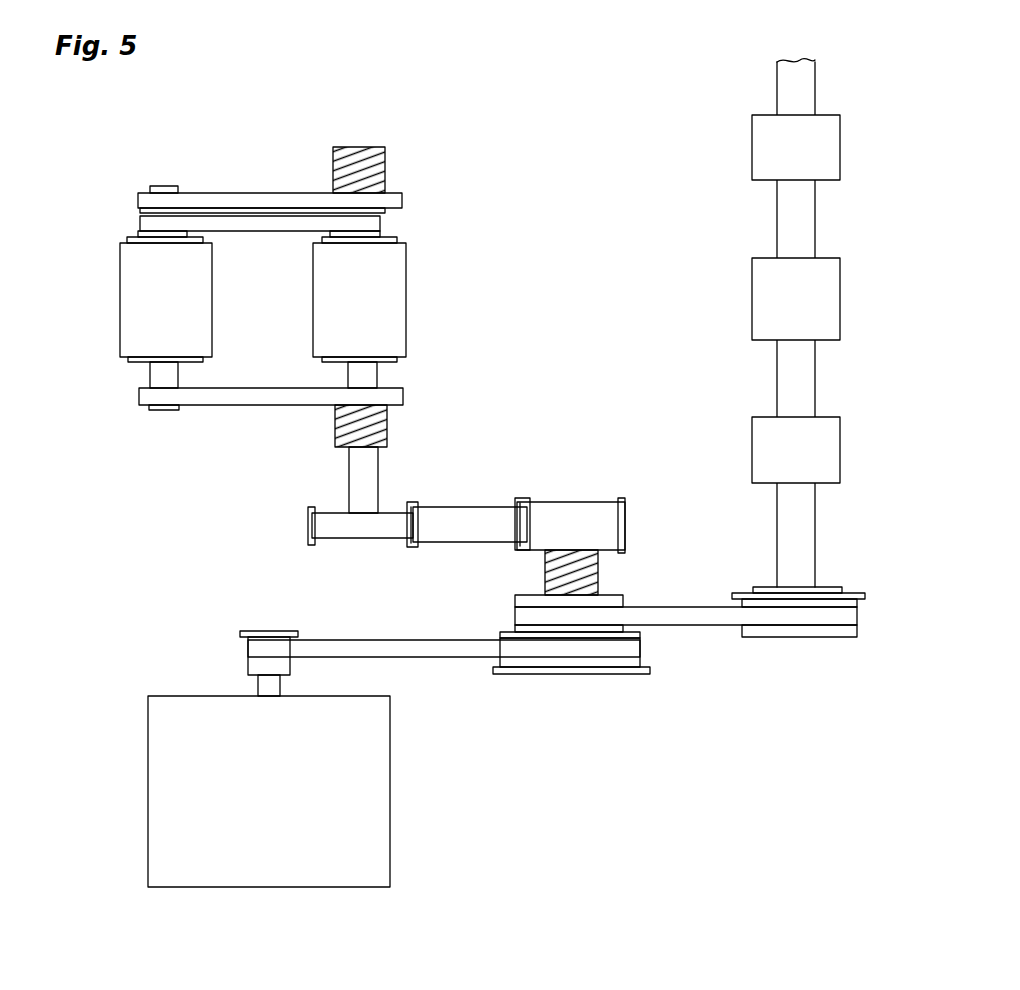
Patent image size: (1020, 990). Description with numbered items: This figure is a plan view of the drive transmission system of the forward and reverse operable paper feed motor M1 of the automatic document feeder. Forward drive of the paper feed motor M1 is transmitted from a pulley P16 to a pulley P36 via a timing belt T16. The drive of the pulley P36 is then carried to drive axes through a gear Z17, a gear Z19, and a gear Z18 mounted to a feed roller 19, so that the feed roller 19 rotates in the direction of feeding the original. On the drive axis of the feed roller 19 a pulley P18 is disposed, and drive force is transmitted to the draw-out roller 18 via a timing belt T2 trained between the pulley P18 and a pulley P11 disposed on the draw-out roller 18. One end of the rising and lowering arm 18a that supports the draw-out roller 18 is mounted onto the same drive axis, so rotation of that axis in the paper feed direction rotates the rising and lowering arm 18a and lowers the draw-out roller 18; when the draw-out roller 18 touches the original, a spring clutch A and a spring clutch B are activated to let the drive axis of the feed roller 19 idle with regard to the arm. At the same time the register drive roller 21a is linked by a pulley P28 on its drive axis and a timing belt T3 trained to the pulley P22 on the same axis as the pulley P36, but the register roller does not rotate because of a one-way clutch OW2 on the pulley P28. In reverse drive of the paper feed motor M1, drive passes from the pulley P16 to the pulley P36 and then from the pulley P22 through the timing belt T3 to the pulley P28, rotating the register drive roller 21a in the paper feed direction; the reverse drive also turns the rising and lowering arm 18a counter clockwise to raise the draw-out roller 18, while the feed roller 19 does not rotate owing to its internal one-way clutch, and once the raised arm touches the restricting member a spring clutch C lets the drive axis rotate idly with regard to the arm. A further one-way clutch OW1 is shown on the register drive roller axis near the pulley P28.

The rising and lowering arm 18a is at (216, 200).
The timing belt T2 is at (263, 232).
The pulley P11 is at (140, 213).
The pulley P18 is at (385, 213).
The draw-out roller 18 is at (135, 338).
The feed roller 19 is at (378, 283).
The spring clutch A is at (370, 148).
The spring clutch B is at (385, 423).
The one-way clutch OW2 is at (383, 375).
The gear Z18 is at (364, 528).
The gear Z19 is at (462, 520).
The gear Z17 is at (575, 517).
The spring clutch C is at (545, 575).
The pulley P22 is at (620, 600).
The timing belt T3 is at (715, 624).
The pulley P36 is at (572, 674).
The timing belt T16 is at (447, 657).
The pulley P16 is at (250, 664).
The paper feed motor M1 is at (285, 862).
The register drive roller 21a is at (763, 150).
The one-way clutch OW1 is at (827, 587).
The pulley P28 is at (815, 635).